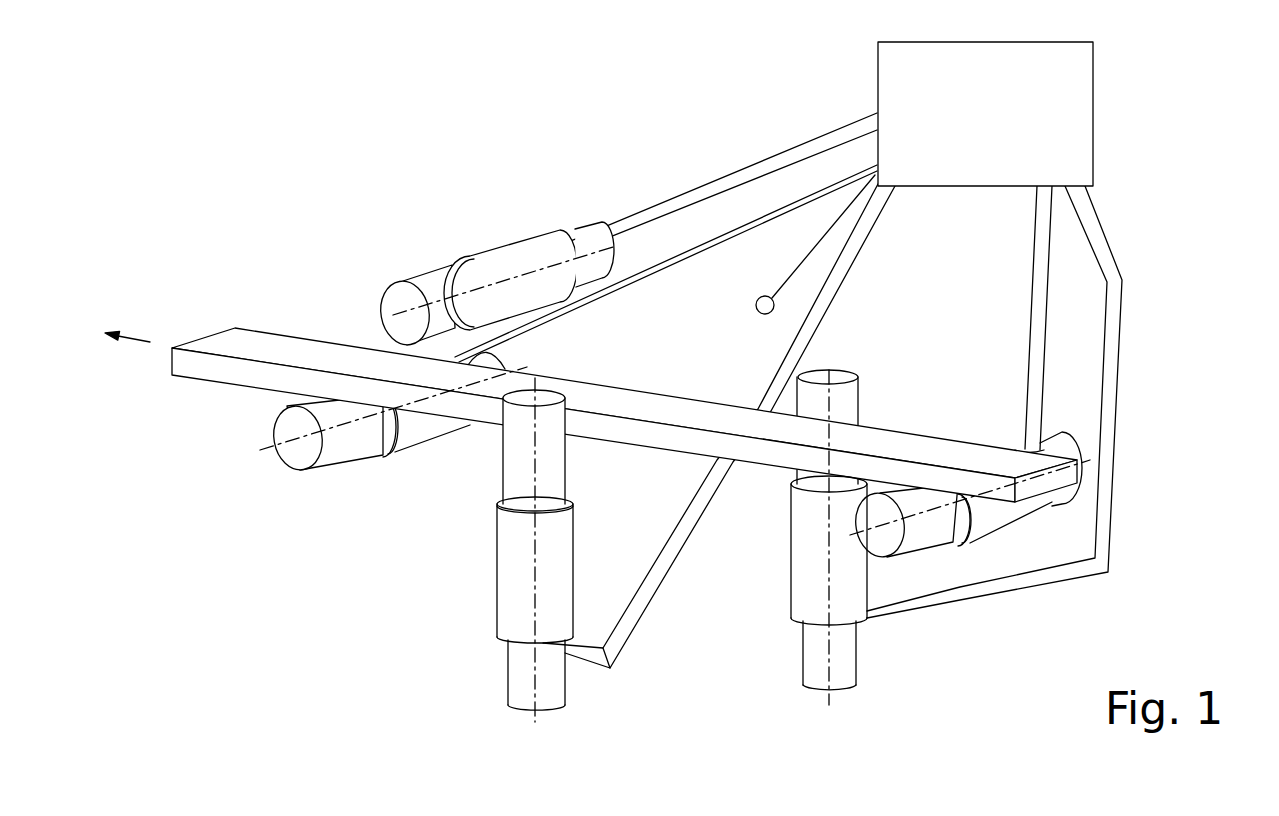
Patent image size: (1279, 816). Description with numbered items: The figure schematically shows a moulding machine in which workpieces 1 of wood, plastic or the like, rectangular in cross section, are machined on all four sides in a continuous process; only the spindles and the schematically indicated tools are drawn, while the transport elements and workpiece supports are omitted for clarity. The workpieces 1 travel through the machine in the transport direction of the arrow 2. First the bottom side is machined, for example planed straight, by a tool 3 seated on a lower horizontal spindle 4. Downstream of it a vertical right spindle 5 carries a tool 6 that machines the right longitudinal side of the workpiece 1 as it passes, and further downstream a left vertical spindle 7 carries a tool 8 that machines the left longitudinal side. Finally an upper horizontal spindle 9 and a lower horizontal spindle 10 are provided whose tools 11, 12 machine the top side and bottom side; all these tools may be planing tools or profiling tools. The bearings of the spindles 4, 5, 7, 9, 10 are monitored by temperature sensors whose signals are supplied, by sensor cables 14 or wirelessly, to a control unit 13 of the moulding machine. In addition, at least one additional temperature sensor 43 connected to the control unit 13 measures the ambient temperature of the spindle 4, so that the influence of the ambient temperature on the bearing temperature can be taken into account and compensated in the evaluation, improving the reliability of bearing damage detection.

The workpiece 1 is at (905, 445).
The arrow 2 is at (127, 317).
The tool 3 is at (918, 530).
The horizontal spindle 4 is at (1007, 512).
The vertical right spindle 5 is at (810, 563).
The tool 6 is at (845, 402).
The left vertical spindle 7 is at (517, 575).
The tool 8 is at (520, 440).
The upper horizontal spindle 9 is at (512, 262).
The lower horizontal spindle 10 is at (405, 435).
The tool 11 is at (437, 287).
The tool 12 is at (337, 448).
The control unit 13 is at (1060, 102).
The sensor cables 14 is at (685, 198).
The additional temperature sensor 43 is at (760, 295).